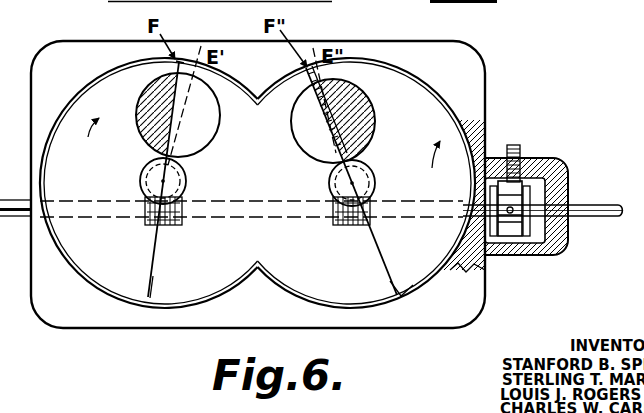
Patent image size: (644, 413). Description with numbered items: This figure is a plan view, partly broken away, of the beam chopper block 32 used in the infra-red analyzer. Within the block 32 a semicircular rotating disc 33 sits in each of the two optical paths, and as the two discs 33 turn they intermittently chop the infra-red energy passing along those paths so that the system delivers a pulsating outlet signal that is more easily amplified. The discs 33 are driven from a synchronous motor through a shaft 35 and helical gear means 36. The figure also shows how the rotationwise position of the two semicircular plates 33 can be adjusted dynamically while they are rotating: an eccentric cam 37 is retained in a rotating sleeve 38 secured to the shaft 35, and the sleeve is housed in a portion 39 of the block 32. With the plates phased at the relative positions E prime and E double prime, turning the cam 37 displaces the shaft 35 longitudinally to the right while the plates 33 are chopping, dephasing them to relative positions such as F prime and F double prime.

The beam chopper block 32 is at (122, 330).
The semicircular rotating disc 33 is at (87, 110).
The shaft 35 is at (607, 211).
The helical gear means 36 is at (178, 226).
The eccentric cam 37 is at (530, 191).
The rotating sleeve 38 is at (517, 237).
The portion of block 39 is at (553, 256).